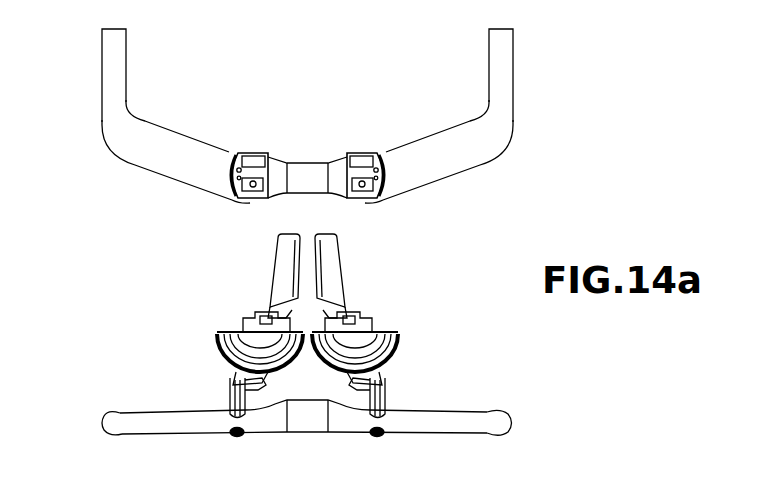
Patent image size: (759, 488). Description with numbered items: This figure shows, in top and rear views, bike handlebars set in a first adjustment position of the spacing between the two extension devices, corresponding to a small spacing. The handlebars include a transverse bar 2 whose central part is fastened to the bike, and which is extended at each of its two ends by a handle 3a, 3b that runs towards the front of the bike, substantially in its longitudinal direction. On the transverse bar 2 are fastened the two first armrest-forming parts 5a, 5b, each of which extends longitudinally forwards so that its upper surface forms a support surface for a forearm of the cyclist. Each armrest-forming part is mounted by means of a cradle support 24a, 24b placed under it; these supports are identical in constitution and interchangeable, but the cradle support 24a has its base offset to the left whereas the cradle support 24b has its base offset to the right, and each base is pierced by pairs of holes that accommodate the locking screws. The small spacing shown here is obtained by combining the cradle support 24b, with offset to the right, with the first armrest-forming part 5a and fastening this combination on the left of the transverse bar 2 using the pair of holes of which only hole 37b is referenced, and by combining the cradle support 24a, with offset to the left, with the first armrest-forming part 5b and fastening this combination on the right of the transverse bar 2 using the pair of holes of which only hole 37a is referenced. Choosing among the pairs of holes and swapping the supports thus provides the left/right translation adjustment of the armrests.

The transverse bar 2 is at (167, 165).
The handle 3a is at (112, 63).
The handle 3b is at (498, 63).
The first armrest-forming part 5a is at (220, 345).
The first armrest-forming part 5b is at (397, 345).
The cradle support 24a is at (387, 190).
The cradle support 24b is at (233, 199).
The hole 37a is at (362, 148).
The hole 37b is at (252, 148).